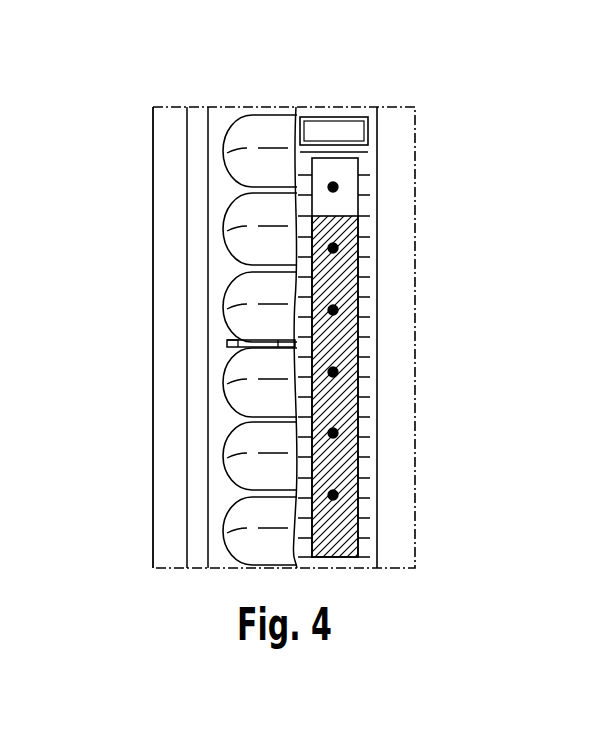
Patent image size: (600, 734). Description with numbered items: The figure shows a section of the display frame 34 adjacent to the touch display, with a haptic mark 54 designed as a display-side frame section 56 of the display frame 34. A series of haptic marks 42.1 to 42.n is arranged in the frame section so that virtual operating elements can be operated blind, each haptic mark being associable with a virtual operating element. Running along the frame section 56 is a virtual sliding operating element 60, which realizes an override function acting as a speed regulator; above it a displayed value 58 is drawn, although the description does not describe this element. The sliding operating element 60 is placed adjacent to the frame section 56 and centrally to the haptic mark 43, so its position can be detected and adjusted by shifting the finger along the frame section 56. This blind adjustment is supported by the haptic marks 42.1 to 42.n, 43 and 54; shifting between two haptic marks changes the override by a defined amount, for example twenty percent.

The display frame 34 is at (178, 243).
The haptic mark 42.1 is at (240, 166).
The haptic mark 42.n is at (240, 545).
The haptic mark 43 is at (226, 343).
The state-of-charge display value 58 is at (330, 108).
The virtual sliding operating element 60 is at (355, 200).
The display-side frame section 56 is at (323, 290).
The haptic mark 54 is at (306, 330).